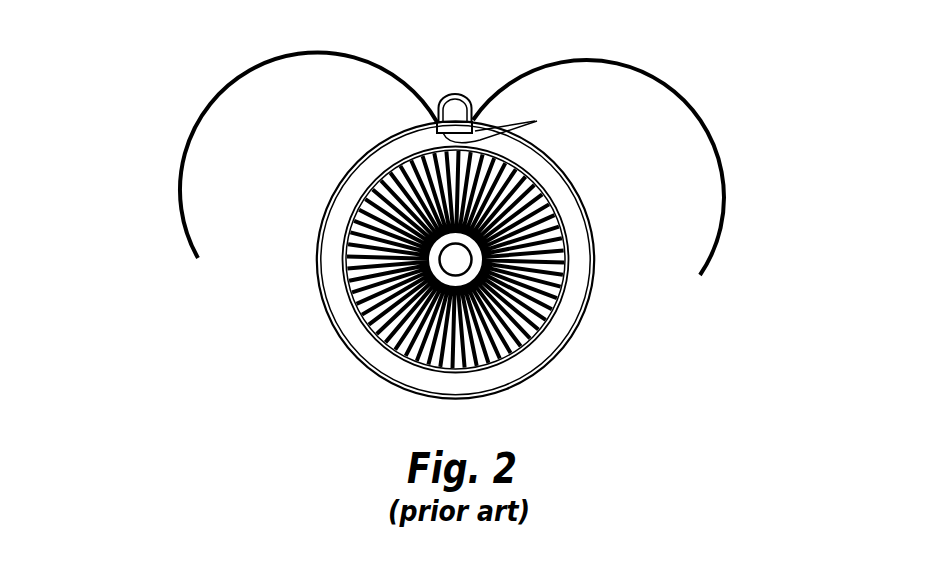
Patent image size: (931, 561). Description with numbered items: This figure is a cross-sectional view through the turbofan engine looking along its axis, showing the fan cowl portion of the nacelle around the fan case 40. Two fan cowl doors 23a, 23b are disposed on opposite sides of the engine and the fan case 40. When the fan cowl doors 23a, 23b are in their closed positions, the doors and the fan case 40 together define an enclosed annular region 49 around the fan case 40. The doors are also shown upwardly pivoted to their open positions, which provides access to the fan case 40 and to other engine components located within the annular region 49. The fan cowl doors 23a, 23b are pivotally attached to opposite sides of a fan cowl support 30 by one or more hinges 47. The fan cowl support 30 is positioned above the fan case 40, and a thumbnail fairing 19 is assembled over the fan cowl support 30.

The thumbnail fairing 19 is at (450, 93).
The fan cowl support 30 is at (467, 104).
The hinge 47 is at (503, 126).
The fan case 40 is at (363, 200).
The annular region 49 is at (577, 242).
The fan cowl door 23a is at (642, 78).
The fan cowl door 23b is at (195, 143).